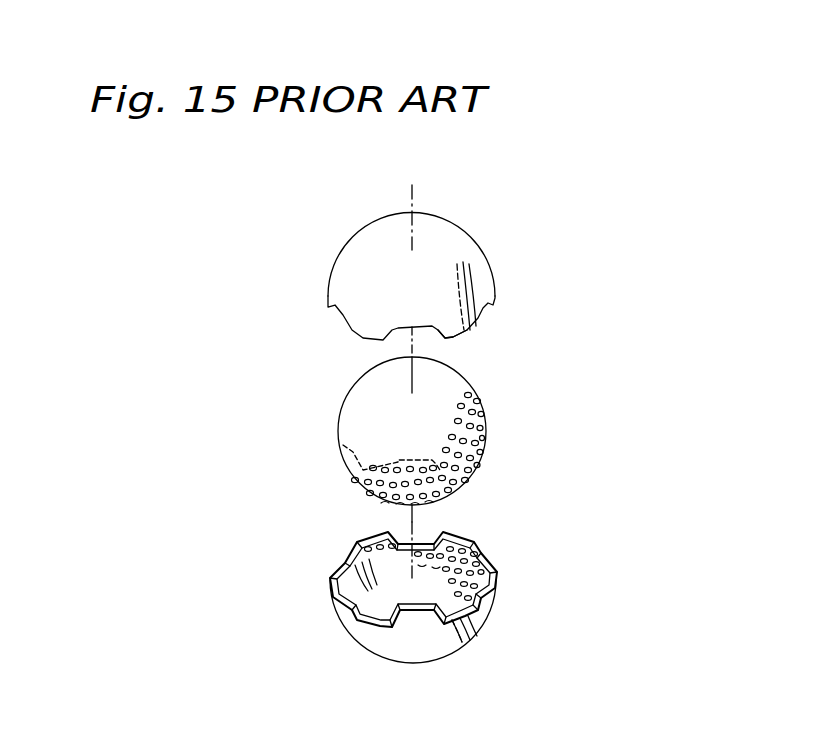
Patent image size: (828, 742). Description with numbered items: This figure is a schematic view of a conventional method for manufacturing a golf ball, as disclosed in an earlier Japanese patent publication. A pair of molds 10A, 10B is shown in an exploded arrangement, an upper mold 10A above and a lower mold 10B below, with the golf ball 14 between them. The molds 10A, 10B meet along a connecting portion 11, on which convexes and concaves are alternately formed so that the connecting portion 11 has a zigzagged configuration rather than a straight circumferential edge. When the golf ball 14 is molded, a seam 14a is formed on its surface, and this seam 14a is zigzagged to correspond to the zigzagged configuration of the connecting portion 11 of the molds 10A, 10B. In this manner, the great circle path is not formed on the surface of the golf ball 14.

The mold 10A is at (345, 244).
The mold 10B is at (353, 579).
The connecting portion 11 is at (347, 560).
The golf ball 14 is at (348, 412).
The seam 14a is at (342, 456).